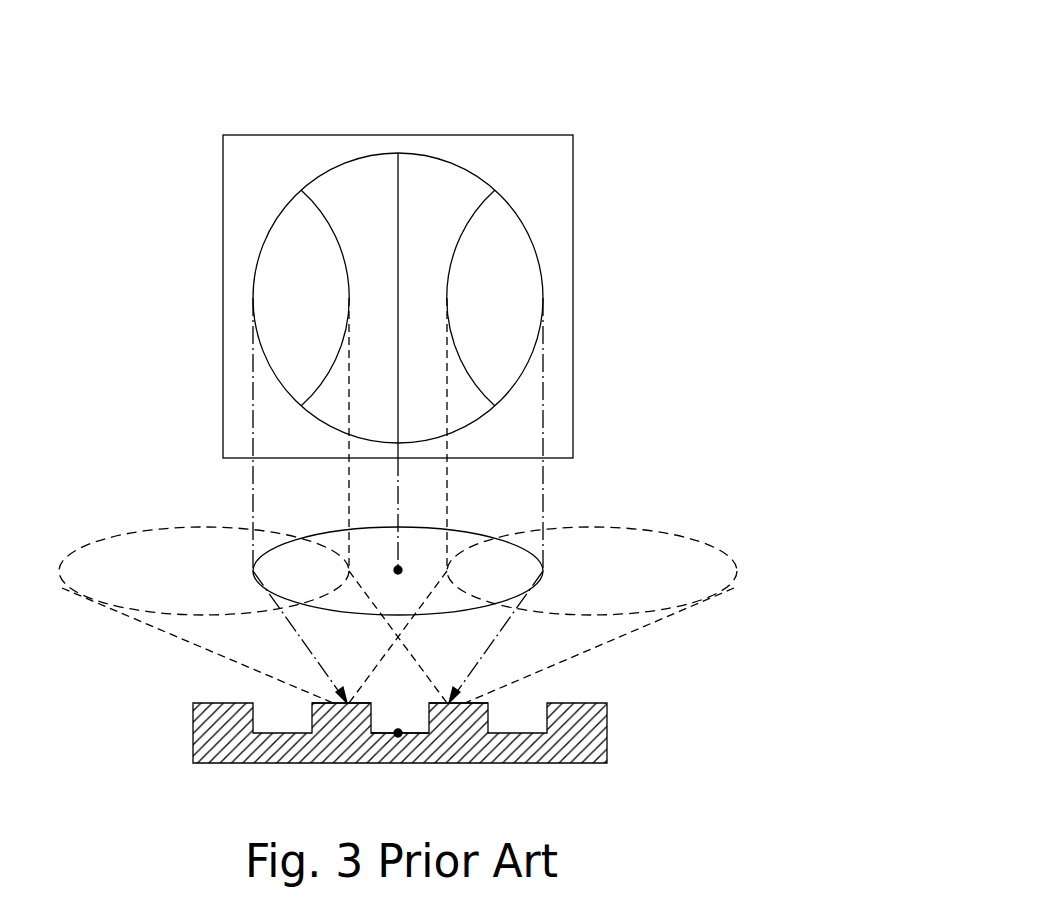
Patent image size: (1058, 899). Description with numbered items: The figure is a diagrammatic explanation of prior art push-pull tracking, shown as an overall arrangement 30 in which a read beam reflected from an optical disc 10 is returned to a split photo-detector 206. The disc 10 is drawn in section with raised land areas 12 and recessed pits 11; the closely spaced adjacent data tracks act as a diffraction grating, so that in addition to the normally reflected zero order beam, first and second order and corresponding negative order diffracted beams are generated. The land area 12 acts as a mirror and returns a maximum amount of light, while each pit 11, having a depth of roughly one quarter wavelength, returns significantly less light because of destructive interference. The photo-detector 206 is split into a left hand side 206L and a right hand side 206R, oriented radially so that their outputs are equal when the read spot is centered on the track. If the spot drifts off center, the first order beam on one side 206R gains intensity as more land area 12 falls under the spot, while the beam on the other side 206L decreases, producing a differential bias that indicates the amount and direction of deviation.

The split photo-detector 206 is at (393, 113).
The left hand side of the photo detector 206L is at (266, 148).
The right hand side of the photo detector 206R is at (531, 148).
The prior art optical system 30 is at (822, 104).
The optical disc 10 is at (608, 730).
The land area 12 is at (470, 703).
The pit 11 is at (398, 736).